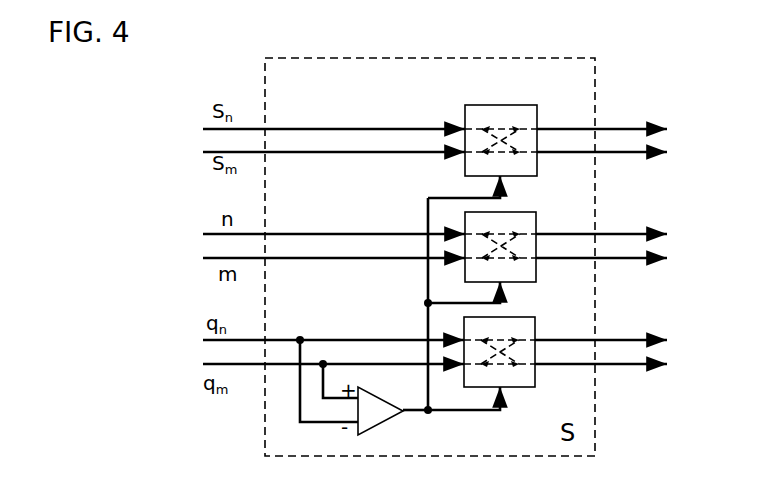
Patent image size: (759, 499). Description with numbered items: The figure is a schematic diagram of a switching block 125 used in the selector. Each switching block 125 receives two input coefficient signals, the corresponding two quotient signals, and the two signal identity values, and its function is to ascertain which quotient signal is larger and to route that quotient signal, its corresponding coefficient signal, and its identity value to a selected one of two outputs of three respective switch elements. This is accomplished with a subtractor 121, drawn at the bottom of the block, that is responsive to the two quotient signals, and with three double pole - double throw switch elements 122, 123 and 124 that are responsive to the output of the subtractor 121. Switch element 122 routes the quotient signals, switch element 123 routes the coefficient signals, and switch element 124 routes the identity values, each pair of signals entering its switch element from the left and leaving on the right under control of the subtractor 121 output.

The subtractor 121 is at (372, 421).
The switch element 122 is at (517, 317).
The switch element 123 is at (518, 105).
The switch element 124 is at (517, 212).
The switching block 125 is at (543, 58).